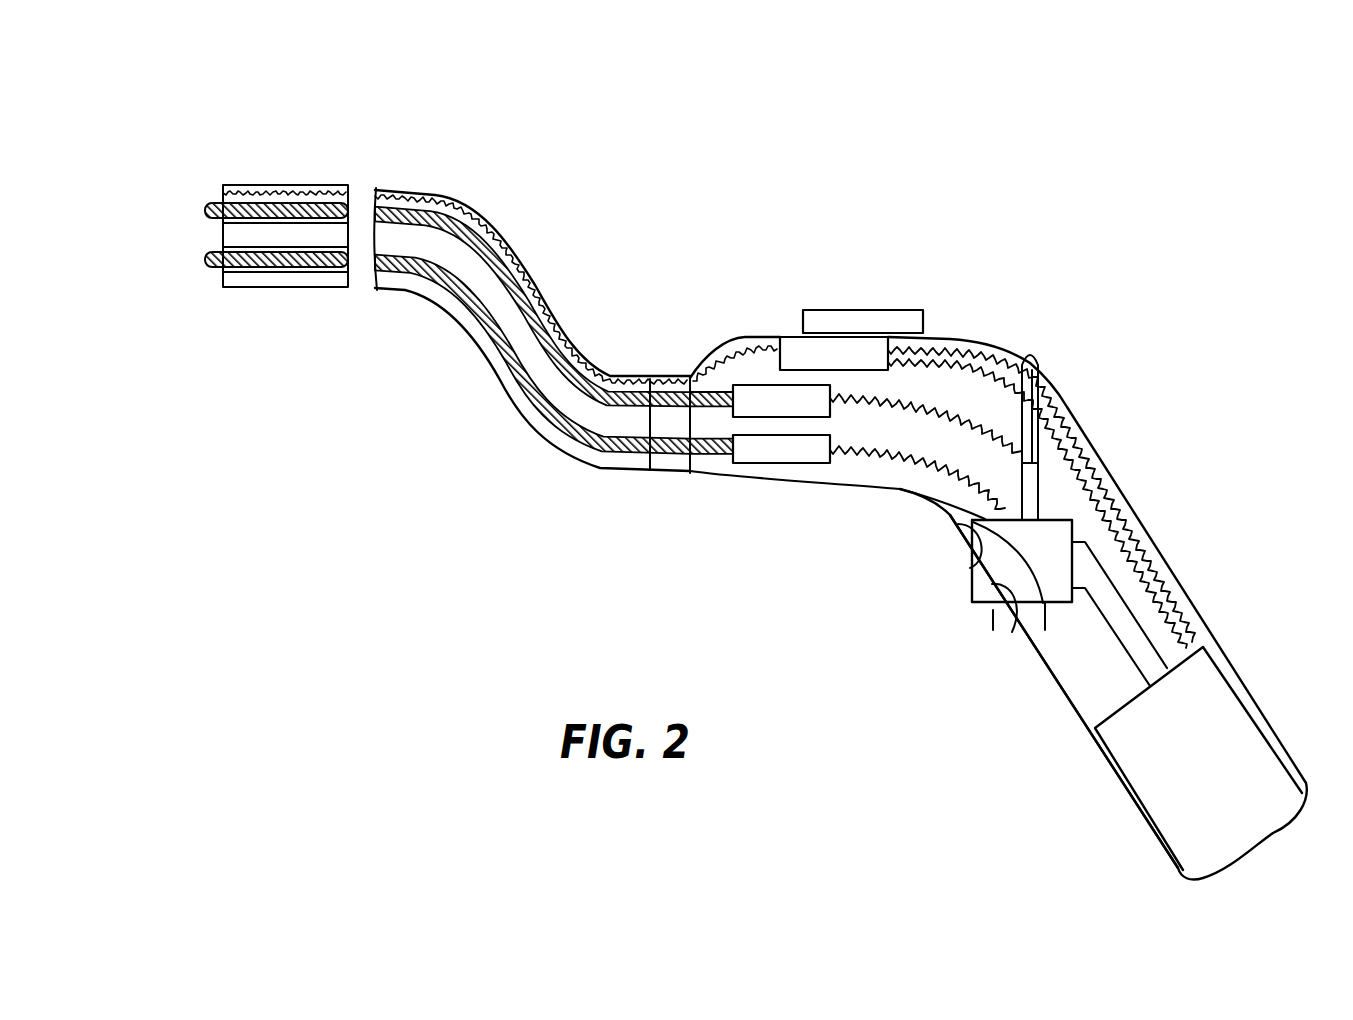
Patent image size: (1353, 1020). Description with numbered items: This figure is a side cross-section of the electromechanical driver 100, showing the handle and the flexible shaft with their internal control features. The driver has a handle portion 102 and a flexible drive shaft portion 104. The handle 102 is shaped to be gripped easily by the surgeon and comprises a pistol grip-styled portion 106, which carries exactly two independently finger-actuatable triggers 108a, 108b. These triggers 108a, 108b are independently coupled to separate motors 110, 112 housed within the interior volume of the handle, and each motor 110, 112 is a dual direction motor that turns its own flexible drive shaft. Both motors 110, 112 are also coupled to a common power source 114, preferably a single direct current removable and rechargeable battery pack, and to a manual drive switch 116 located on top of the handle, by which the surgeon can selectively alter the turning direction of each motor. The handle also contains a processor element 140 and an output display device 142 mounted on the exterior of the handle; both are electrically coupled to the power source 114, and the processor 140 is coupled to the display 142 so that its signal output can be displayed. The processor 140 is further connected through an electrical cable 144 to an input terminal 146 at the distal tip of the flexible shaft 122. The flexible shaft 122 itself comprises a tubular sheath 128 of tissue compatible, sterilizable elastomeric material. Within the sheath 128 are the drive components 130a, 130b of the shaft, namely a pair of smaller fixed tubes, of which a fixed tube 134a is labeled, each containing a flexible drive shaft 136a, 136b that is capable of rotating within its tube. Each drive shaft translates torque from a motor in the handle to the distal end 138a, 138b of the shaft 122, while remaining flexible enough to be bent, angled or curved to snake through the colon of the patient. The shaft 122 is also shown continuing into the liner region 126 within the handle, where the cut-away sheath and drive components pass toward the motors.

The electromechanical driver 100 is at (725, 160).
The handle portion 102 is at (1110, 425).
The flexible drive shaft portion 104 is at (545, 190).
The pistol grip-styled portion 106 is at (1080, 684).
The finger-actuatable trigger 108a is at (960, 542).
The finger-actuatable trigger 108b is at (998, 600).
The motor 110 is at (777, 462).
The motor 112 is at (768, 392).
The power source 114 is at (1218, 769).
The manual drive switch 116 is at (1058, 345).
The flexible drive shaft 122 is at (585, 320).
The liner 126 is at (862, 483).
The tubular sheath 128 is at (445, 192).
The drive component 130a is at (650, 468).
The drive component 130b is at (650, 378).
The fixed tube 134a is at (318, 205).
The flexible drive shaft 136a is at (272, 193).
The flexible drive shaft 136b is at (250, 275).
The distal end 138a is at (190, 210).
The distal end 138b is at (190, 260).
The processor element 140 is at (795, 320).
The output display device 142 is at (900, 295).
The electrical cable 144 is at (398, 188).
The input terminal 146 is at (225, 205).